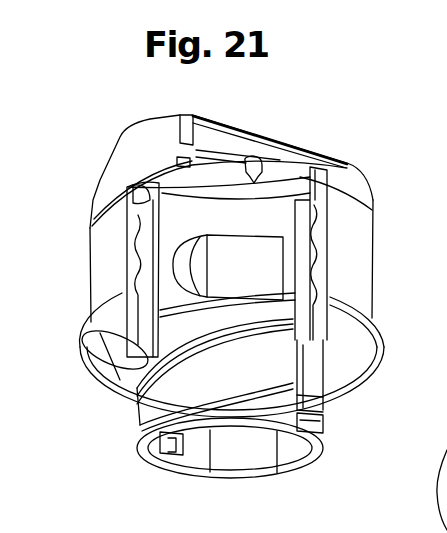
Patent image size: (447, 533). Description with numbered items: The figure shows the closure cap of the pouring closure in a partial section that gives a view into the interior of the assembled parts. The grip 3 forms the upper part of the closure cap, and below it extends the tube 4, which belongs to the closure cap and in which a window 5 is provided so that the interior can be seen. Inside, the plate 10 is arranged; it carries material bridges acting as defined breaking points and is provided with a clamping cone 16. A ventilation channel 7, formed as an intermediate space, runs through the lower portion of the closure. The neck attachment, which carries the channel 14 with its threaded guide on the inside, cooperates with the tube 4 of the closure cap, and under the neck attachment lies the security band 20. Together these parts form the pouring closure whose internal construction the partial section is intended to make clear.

The grip 3 is at (160, 118).
The clamping cone 16 is at (283, 170).
The plate 10 is at (303, 163).
The window 5 is at (255, 268).
The security band 20 is at (360, 333).
The channel 14 is at (83, 382).
The tube 4 is at (127, 400).
The ventilation channel 7 is at (183, 450).